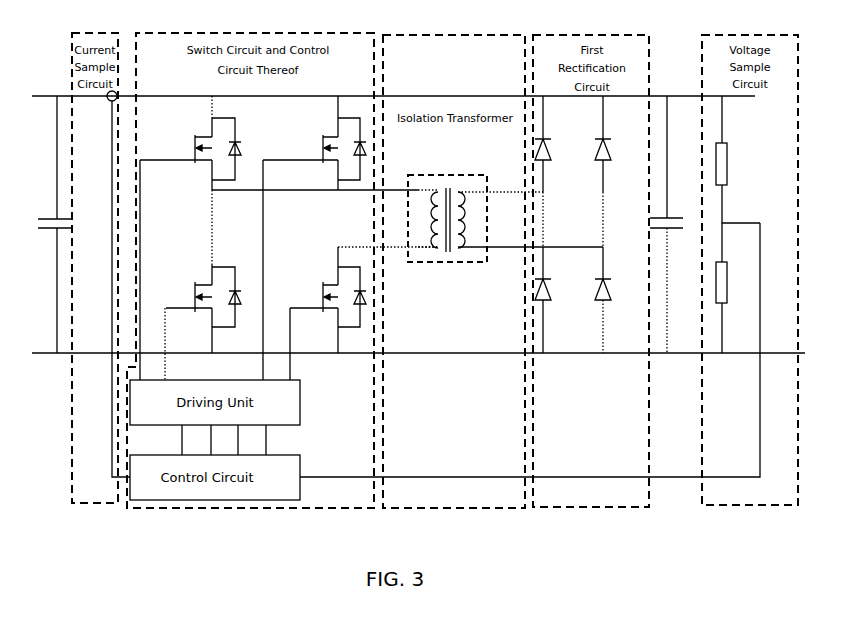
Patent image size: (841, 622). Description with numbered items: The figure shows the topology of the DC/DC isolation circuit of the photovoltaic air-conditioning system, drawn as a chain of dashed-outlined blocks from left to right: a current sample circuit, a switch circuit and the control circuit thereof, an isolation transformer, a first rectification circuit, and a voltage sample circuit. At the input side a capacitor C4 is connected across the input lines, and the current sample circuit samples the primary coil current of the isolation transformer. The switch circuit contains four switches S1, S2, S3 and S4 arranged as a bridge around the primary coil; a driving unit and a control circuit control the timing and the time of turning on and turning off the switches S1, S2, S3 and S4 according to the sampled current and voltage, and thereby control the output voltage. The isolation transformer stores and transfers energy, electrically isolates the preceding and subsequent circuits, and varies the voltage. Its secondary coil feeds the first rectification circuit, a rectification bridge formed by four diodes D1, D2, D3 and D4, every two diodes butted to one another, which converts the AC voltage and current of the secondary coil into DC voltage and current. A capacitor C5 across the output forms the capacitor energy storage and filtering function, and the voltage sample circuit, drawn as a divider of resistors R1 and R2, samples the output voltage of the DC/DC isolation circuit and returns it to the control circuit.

The input capacitor C4 is at (52, 224).
The switch S1 is at (190, 143).
The switch S2 is at (199, 309).
The switch S3 is at (314, 143).
The switch S4 is at (323, 300).
The first rectifier diode D1 is at (561, 171).
The second rectifier diode D2 is at (561, 300).
The third rectifier diode D3 is at (621, 171).
The fourth rectifier diode D4 is at (621, 300).
The output capacitor C5 is at (675, 224).
The first voltage sample resistor R1 is at (738, 159).
The second voltage sample resistor R2 is at (738, 288).